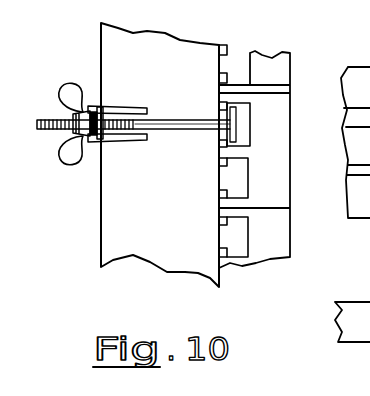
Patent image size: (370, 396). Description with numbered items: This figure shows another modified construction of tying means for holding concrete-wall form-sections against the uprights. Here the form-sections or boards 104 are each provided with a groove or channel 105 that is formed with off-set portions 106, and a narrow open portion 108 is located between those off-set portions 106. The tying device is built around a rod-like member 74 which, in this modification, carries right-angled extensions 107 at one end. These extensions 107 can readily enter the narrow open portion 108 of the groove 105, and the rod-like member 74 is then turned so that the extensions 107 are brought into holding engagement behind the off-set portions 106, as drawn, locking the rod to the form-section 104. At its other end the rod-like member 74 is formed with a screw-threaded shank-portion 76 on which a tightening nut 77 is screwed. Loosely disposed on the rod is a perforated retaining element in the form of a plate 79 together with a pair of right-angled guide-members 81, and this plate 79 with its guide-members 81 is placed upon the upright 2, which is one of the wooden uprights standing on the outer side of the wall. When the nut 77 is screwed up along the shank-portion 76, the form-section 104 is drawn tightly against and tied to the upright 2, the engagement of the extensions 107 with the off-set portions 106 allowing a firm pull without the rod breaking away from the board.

The upright 2 is at (110, 222).
The rod-like member 74 is at (173, 121).
The screw-threaded shank-portion 76 is at (40, 119).
The tightening nut 77 is at (68, 98).
The plate 79 is at (93, 148).
The right-angled guide-members 81 is at (122, 108).
The form-section or board 104 is at (276, 108).
The groove or channel 105 is at (242, 118).
The off-set portions 106 is at (219, 87).
The right-angled extensions 107 is at (236, 132).
The narrow open portion 108 is at (220, 133).